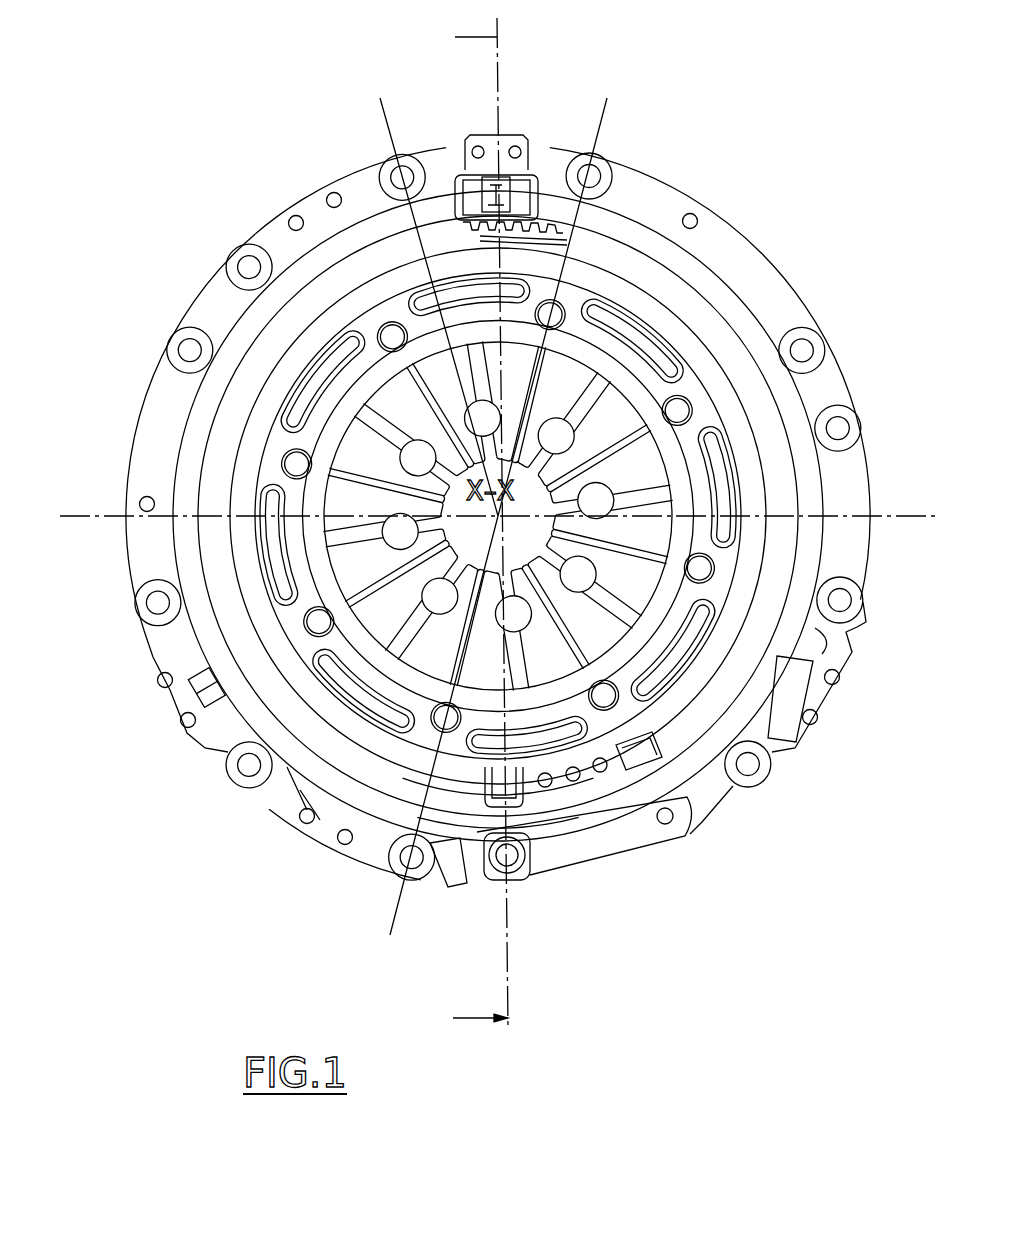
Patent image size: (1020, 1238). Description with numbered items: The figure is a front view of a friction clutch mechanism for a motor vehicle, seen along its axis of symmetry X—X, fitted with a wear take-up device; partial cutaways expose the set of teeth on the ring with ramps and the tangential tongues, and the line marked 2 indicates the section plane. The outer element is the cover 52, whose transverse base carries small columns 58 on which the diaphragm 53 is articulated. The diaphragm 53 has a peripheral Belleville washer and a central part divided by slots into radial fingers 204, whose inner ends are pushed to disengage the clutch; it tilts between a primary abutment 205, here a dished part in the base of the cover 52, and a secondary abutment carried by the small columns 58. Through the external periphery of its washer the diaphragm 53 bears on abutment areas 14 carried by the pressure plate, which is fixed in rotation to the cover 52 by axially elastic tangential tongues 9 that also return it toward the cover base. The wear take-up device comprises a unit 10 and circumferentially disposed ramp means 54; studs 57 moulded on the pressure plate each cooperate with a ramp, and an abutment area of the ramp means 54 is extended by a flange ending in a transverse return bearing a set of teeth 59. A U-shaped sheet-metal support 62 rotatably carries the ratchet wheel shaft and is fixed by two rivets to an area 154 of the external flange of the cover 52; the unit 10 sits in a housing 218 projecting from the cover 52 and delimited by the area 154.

The section line II-II 2 is at (499, 527).
The tangential tongues 9 is at (627, 842).
The unit 10 is at (452, 162).
The abutment areas 14 is at (447, 258).
The cover 52 is at (236, 412).
The diaphragm 53 is at (355, 567).
The ramp means 54 is at (418, 262).
The studs 57 is at (513, 785).
The small columns 58 is at (313, 630).
The set of teeth 59 is at (570, 226).
The support 62 is at (540, 170).
The area 154 is at (167, 703).
The radial fingers 204 is at (405, 785).
The primary abutment 205 is at (640, 323).
The housing 218 is at (797, 743).